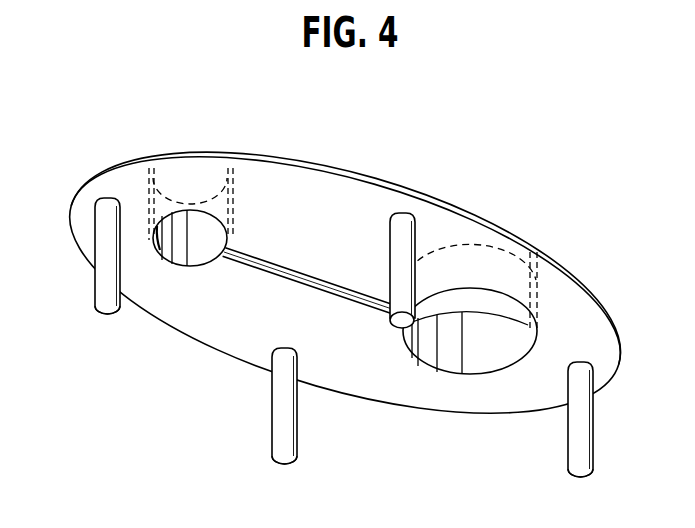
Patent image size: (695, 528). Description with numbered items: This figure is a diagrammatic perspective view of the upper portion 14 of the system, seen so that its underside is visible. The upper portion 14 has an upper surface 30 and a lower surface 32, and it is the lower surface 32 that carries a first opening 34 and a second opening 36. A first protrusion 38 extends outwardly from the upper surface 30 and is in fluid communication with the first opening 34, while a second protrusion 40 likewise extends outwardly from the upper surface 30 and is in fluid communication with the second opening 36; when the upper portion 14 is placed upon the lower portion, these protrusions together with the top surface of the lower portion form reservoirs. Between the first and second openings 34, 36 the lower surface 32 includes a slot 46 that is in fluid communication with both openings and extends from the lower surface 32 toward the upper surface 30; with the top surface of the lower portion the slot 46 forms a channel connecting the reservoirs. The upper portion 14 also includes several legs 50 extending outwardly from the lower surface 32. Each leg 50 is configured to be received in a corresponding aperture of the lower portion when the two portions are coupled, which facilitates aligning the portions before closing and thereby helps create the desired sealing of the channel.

The upper portion 14 is at (349, 285).
The upper surface 30 is at (313, 167).
The lower surface 32 is at (600, 341).
The first opening 34 is at (185, 268).
The second opening 36 is at (477, 378).
The first protrusion 38 is at (193, 150).
The second protrusion 40 is at (510, 226).
The slot 46 is at (293, 280).
The leg 50 is at (98, 262).